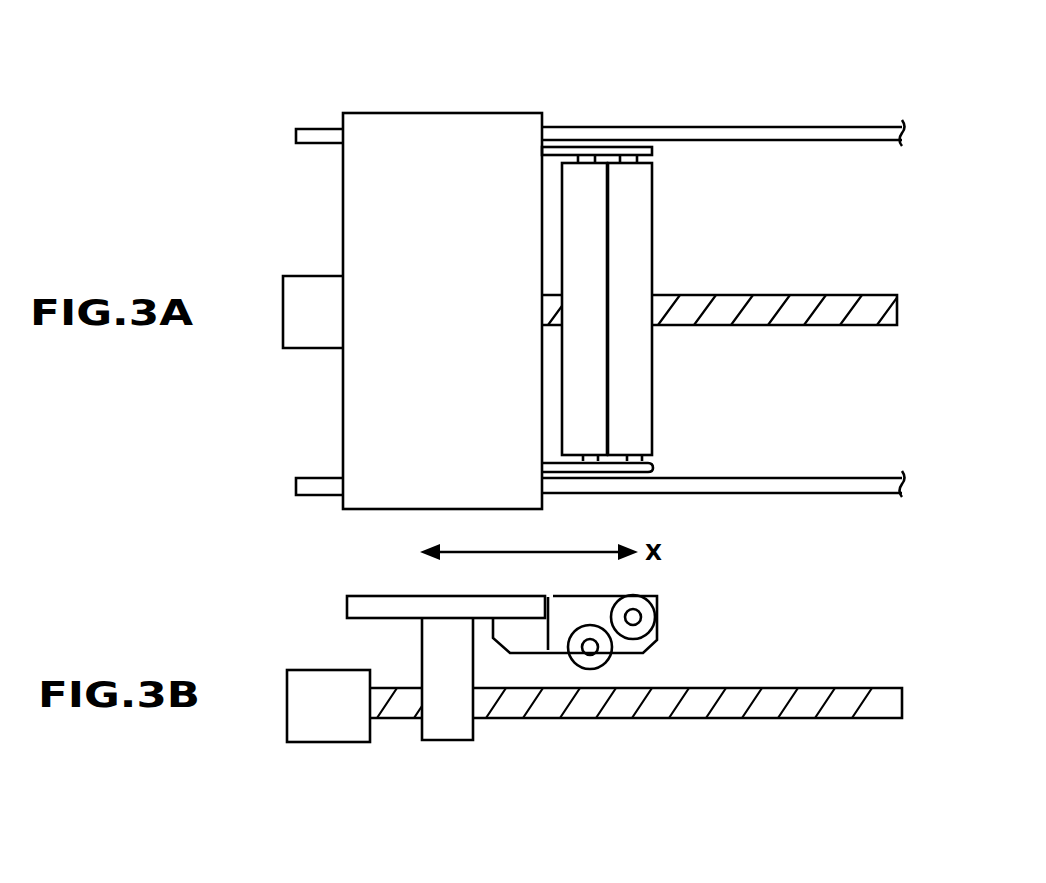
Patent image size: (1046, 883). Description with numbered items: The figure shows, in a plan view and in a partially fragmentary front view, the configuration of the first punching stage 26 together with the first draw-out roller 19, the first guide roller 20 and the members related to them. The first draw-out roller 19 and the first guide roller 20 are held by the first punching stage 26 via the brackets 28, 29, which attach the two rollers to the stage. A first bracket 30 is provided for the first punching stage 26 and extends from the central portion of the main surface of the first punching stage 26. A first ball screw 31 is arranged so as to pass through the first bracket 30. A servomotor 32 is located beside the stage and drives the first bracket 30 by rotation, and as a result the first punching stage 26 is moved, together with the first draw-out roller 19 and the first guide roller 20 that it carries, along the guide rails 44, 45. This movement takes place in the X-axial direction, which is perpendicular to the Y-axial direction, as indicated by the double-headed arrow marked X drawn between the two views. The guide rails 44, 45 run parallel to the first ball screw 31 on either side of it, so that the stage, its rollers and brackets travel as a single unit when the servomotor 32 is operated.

In FIG. 3A, the first draw-out roller 19 is at (633, 188).
In FIG. 3B, the first draw-out roller 19 is at (648, 622).
In FIG. 3A, the first guide roller 20 is at (598, 255).
In FIG. 3B, the first guide roller 20 is at (600, 657).
In FIG. 3A, the first punching stage 26 is at (363, 122).
In FIG. 3B, the first punching stage 26 is at (360, 605).
In FIG. 3A, the bracket 28 is at (562, 153).
In FIG. 3B, the bracket 28 is at (587, 603).
In FIG. 3A, the bracket 29 is at (653, 465).
In FIG. 3B, the bracket 29 is at (521, 648).
In FIG. 3B, the first bracket 30 is at (448, 727).
In FIG. 3A, the first ball screw 31 is at (792, 308).
In FIG. 3B, the first ball screw 31 is at (800, 703).
In FIG. 3A, the servomotor 32 is at (305, 333).
In FIG. 3B, the servomotor 32 is at (328, 727).
In FIG. 3A, the guide rail 44 is at (750, 128).
In FIG. 3A, the guide rail 45 is at (822, 483).